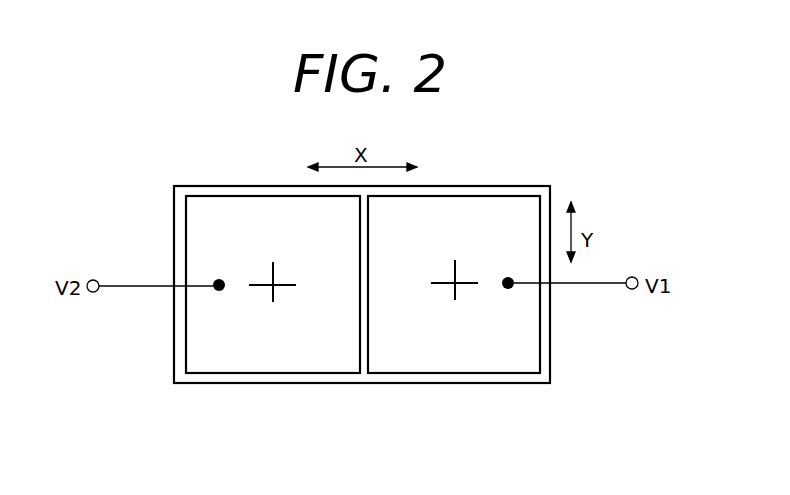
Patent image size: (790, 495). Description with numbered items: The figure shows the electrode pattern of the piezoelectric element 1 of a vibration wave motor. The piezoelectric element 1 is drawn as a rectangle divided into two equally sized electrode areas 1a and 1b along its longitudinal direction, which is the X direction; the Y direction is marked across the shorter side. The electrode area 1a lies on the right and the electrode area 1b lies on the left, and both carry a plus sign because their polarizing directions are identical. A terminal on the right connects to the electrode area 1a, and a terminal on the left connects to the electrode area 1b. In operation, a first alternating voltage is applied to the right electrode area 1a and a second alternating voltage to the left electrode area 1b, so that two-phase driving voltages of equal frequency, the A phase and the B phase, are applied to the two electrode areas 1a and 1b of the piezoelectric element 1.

The piezoelectric element 1 is at (490, 186).
The electrode area 1a is at (462, 383).
The electrode area 1b is at (278, 373).